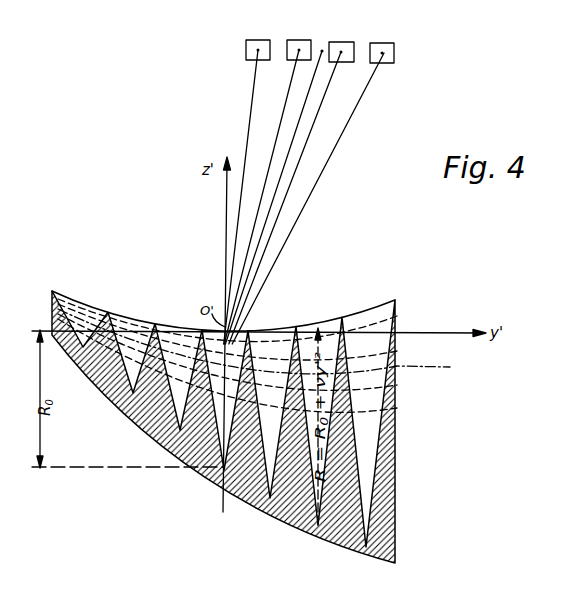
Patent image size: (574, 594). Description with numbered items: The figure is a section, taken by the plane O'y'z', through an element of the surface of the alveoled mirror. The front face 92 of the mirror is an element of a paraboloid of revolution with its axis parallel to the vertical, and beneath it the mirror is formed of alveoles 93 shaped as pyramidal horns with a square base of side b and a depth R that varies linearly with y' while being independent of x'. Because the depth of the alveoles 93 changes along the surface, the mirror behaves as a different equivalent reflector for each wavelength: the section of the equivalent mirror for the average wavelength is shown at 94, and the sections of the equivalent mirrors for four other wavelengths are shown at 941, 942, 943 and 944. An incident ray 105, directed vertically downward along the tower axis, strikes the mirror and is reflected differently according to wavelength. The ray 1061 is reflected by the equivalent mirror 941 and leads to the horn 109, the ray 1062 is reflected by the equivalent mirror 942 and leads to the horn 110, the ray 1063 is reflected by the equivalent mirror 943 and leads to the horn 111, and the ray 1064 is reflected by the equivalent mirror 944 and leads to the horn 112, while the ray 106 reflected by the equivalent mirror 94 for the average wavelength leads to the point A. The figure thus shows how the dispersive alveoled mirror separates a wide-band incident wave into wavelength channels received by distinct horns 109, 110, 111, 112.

The front face 92 is at (122, 314).
The alveoles 93 is at (372, 461).
The section of the equivalent mirror for wavelength λ 94 is at (450, 367).
The section of the equivalent mirror for wavelength λ1 941 is at (397, 316).
The section of the equivalent mirror for wavelength λ2 942 is at (397, 352).
The section of the equivalent mirror for wavelength λ3 943 is at (397, 386).
The section of the equivalent mirror for wavelength λ4 944 is at (397, 412).
The incident ray 105 is at (226, 80).
The reflected ray for the average wavelength 106 is at (303, 110).
The reflected ray for wavelength λ1 1061 is at (246, 125).
The reflected ray for wavelength λ2 1062 is at (272, 156).
The reflected ray for wavelength λ3 1063 is at (300, 157).
The reflected ray for wavelength λ4 1064 is at (348, 123).
The horn 109 is at (252, 42).
The horn 110 is at (293, 42).
The horn 111 is at (336, 44).
The horn 112 is at (378, 44).
The point A is at (322, 50).